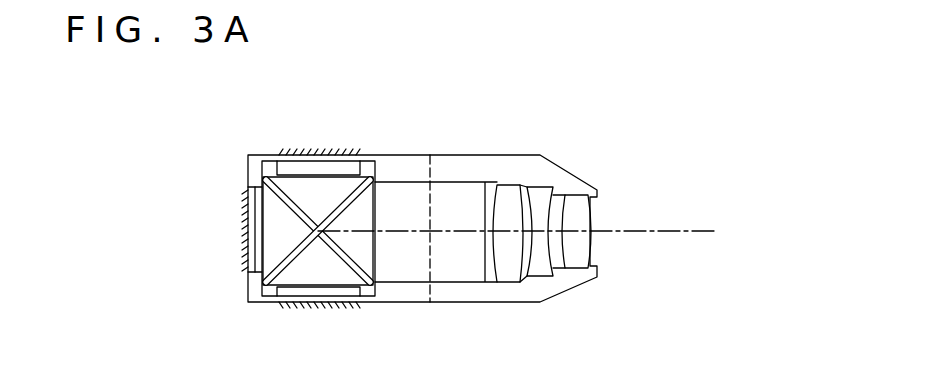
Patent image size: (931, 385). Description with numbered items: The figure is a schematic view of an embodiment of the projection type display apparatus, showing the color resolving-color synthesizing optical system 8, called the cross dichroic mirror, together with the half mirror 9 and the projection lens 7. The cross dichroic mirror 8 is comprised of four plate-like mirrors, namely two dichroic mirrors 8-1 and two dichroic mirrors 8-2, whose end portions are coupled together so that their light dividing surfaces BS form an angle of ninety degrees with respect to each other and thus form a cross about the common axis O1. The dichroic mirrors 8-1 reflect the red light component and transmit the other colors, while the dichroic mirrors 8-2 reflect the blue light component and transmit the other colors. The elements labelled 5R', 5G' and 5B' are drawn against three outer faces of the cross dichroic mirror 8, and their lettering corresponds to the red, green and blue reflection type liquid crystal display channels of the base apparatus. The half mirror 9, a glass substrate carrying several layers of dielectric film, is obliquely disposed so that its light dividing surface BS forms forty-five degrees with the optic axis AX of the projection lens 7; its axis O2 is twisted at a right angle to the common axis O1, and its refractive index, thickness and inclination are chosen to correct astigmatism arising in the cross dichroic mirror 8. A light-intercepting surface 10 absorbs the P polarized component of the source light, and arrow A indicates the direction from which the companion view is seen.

The color resolving-color synthesizing optical system 8 is at (335, 195).
The plate-like dichroic mirror 8-1 is at (266, 180).
The plate-like dichroic mirror 8-2 is at (378, 182).
The light dividing surface BS is at (360, 186).
The red image pickup element 5R' is at (318, 131).
The green image pickup element 5G' is at (216, 229).
The blue image pickup element 5B' is at (301, 324).
The common axis of the cross dichroic mirror O1 is at (312, 231).
The axis of the half mirror O2 is at (432, 152).
The half mirror 9 is at (485, 182).
The light-intercepting surface 10 is at (450, 198).
The projection lens 7 is at (550, 188).
The optic axis AX is at (533, 213).
The arrow A is at (483, 318).